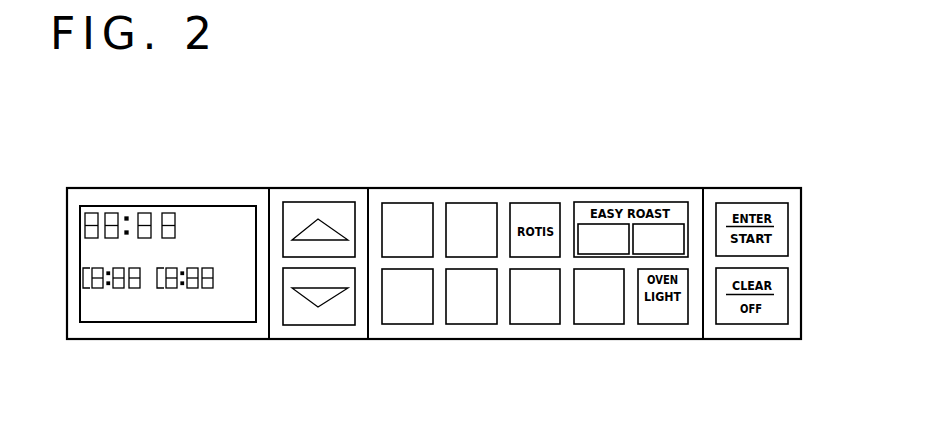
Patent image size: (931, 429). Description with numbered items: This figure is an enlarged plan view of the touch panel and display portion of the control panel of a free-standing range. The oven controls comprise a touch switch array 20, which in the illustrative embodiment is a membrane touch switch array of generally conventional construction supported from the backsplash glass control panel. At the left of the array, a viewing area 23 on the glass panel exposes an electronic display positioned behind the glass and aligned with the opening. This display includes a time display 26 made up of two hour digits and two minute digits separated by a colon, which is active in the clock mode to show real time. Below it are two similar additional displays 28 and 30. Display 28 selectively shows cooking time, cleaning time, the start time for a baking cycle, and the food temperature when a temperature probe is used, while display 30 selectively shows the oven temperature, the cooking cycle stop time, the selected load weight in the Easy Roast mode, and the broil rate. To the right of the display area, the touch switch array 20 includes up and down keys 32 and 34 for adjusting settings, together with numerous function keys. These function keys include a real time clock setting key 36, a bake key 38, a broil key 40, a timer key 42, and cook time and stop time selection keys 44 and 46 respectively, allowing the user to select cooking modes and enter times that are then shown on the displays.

The touch switch array 20 is at (640, 188).
The viewing area 23 is at (214, 224).
The time display 26 is at (127, 214).
The display 28 is at (110, 288).
The display 30 is at (187, 290).
The up key 32 is at (338, 210).
The down key 34 is at (335, 322).
The real time clock setting key 36 is at (538, 322).
The bake key 38 is at (405, 212).
The broil key 40 is at (478, 210).
The timer key 42 is at (598, 322).
The cook time selection key 44 is at (418, 322).
The stop time selection key 46 is at (490, 320).